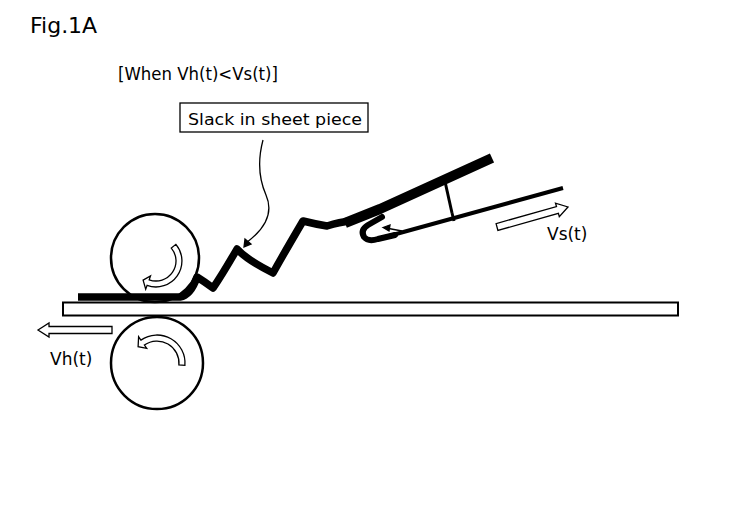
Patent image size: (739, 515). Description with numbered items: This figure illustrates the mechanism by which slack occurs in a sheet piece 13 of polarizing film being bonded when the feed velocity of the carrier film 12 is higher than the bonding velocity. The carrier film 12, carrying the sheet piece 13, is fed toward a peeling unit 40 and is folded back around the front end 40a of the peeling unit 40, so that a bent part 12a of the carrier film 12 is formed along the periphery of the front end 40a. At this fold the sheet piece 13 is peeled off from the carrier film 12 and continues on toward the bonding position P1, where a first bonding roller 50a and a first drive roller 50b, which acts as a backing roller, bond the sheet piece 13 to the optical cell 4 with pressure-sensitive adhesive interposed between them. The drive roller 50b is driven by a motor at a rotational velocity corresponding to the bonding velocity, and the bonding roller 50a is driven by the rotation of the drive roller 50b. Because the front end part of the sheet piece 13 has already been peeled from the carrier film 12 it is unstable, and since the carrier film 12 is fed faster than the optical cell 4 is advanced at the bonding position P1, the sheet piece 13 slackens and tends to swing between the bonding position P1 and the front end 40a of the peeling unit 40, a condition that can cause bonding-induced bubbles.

The first bonding roller 50a is at (148, 212).
The first drive roller 50b is at (145, 393).
The optical cell 4 is at (480, 316).
The sheet piece 13 is at (223, 256).
The carrier film 12 is at (530, 180).
The bent part 12a is at (367, 243).
The peeling unit 40 is at (458, 192).
The front end of the peeling unit 40a is at (435, 230).
The bonding position P1 is at (109, 289).